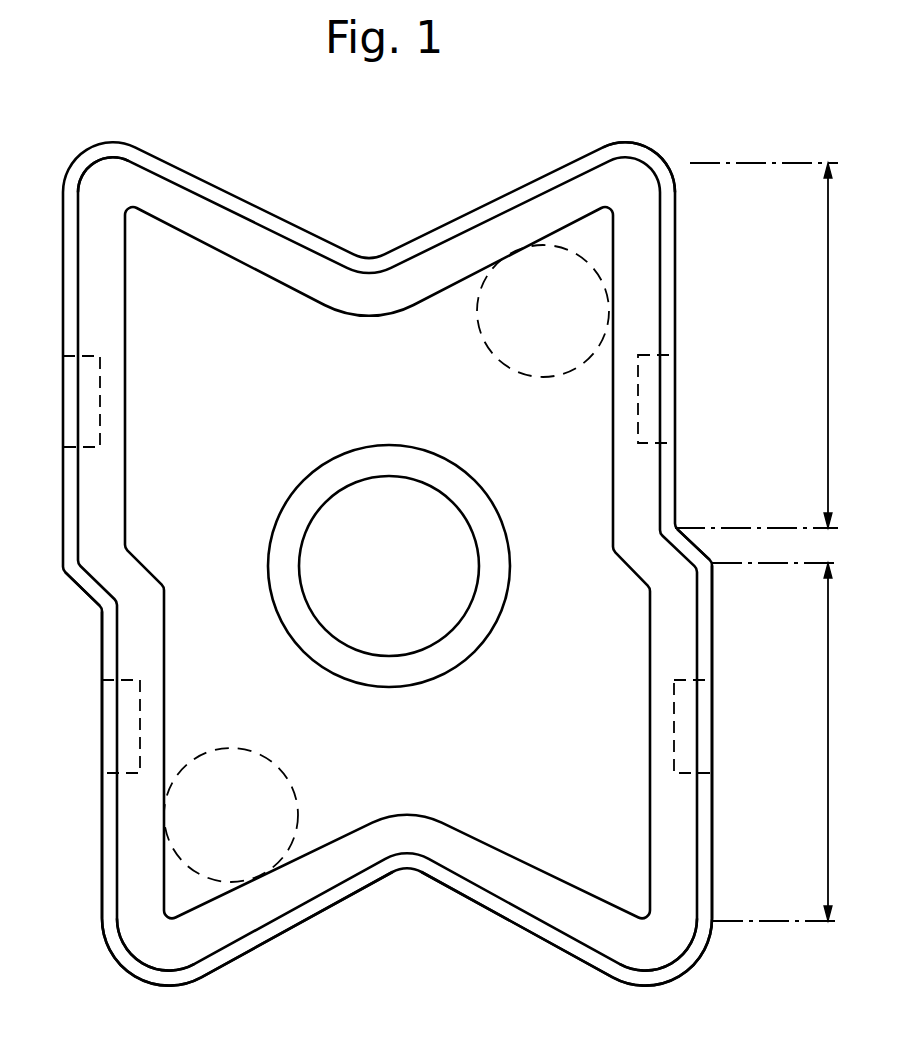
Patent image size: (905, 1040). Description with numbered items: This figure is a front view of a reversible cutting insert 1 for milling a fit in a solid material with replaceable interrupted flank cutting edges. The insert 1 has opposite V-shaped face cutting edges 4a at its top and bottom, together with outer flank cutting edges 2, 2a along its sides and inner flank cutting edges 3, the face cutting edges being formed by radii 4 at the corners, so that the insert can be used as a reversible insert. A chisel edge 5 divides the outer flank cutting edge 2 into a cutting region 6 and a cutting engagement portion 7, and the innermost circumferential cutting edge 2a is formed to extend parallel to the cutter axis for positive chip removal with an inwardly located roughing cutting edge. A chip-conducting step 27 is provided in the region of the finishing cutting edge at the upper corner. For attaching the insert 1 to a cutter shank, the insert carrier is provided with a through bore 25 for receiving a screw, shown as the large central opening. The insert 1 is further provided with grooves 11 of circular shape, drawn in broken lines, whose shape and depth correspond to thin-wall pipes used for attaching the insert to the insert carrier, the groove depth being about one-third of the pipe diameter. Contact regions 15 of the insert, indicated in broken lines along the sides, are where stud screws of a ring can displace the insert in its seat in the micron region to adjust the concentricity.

The reversible cutting insert 1 is at (150, 290).
The outer flank cutting edge 2 is at (703, 880).
The innermost circumferential cutting edge 2a is at (110, 896).
The inner flank cutting edge 3 is at (275, 925).
The radius 4 is at (130, 975).
The V-shaped face cutting edge 4a is at (123, 177).
The chisel edge 5 is at (85, 583).
The cutting region 6 is at (828, 748).
The cutting engagement portion 7 is at (828, 333).
The groove 11 is at (593, 296).
The contact region 15 is at (82, 403).
The through bore 25 is at (455, 528).
The chip-conducting step 27 is at (638, 220).